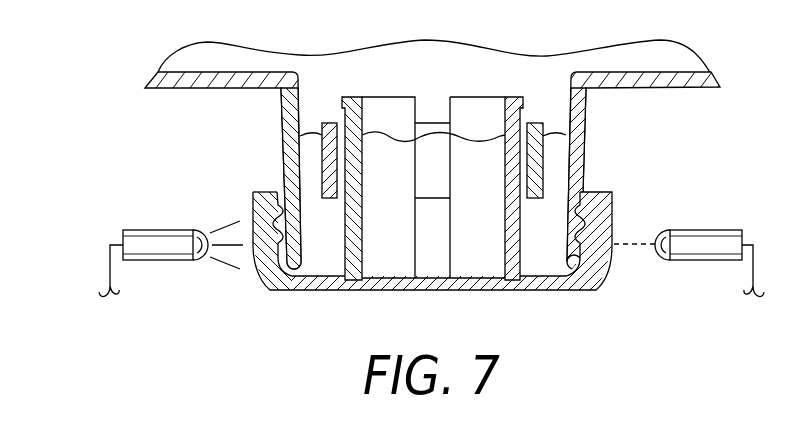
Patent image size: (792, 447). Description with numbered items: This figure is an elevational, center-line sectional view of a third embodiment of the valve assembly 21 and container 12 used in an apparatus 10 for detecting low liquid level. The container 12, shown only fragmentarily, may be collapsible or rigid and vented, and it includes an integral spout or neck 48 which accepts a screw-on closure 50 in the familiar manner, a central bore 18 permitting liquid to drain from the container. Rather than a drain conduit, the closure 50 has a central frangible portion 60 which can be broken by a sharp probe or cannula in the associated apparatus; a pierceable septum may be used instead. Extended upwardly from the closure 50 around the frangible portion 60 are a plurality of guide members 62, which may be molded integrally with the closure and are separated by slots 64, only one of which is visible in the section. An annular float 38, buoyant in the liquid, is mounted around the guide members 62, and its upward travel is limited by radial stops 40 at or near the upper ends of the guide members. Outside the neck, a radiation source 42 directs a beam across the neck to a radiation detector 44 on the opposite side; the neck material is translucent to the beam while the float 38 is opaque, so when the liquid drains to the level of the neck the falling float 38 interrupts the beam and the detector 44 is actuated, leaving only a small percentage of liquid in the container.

The fluid level sensing assembly 10 is at (419, 191).
The container 12 is at (183, 88).
The central bore 18 is at (296, 170).
The valve assembly 21 is at (250, 180).
The annular float 38 is at (331, 121).
The radial stop 40 is at (523, 96).
The radiation source 42 is at (138, 229).
The radiation detector 44 is at (710, 229).
The integral spout or neck 48 is at (583, 152).
The screw-on closure 50 is at (418, 245).
The central frangible portion 60 is at (457, 289).
The guide members 62 is at (432, 141).
The slots 64 is at (418, 115).